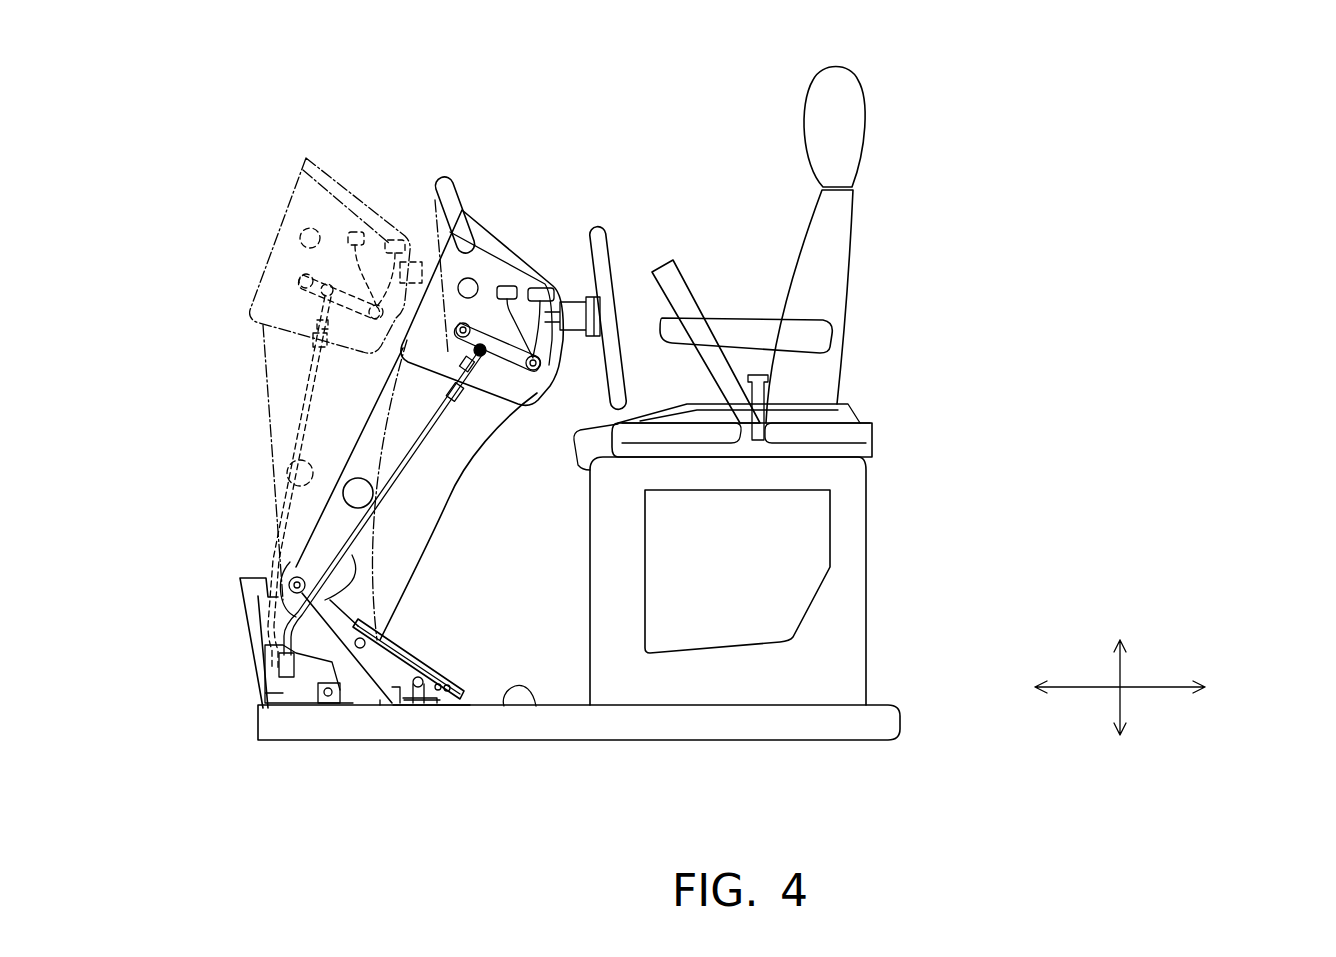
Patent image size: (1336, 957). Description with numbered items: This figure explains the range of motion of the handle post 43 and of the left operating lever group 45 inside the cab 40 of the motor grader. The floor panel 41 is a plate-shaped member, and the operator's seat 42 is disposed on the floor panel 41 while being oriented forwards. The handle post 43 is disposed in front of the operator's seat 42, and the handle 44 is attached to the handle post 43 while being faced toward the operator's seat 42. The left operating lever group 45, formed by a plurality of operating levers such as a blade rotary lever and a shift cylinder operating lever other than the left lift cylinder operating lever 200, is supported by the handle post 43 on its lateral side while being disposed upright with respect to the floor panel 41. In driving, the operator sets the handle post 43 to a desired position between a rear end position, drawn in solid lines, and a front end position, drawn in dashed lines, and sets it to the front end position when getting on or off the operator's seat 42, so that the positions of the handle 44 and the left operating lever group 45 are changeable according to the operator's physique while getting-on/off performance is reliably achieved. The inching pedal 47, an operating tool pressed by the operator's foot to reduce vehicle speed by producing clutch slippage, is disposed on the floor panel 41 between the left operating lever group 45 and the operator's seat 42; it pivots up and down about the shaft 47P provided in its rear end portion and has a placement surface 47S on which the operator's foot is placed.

The cab 40 is at (716, 145).
The floor panel 41 is at (536, 706).
The operator's seat 42 is at (835, 255).
The handle post 43 is at (476, 268).
The handle 44 is at (606, 240).
The left operating lever group 45 is at (528, 232).
The inching pedal 47 is at (436, 703).
The shaft 47P is at (412, 690).
The placement surface 47S is at (430, 656).
The left lift cylinder operating lever 200 is at (352, 555).